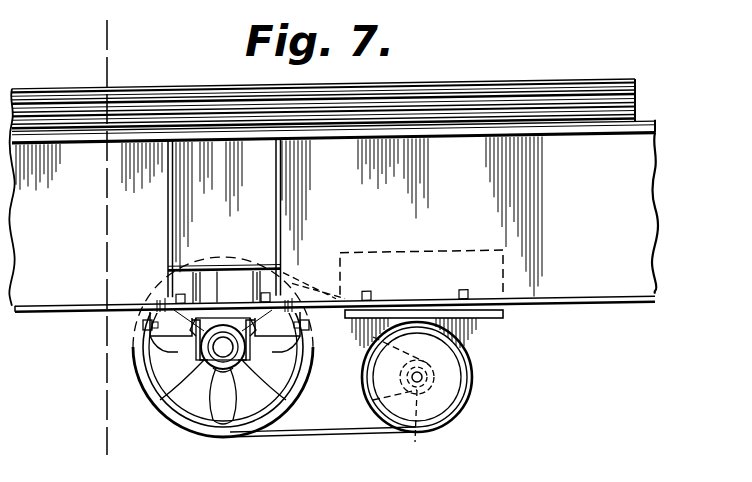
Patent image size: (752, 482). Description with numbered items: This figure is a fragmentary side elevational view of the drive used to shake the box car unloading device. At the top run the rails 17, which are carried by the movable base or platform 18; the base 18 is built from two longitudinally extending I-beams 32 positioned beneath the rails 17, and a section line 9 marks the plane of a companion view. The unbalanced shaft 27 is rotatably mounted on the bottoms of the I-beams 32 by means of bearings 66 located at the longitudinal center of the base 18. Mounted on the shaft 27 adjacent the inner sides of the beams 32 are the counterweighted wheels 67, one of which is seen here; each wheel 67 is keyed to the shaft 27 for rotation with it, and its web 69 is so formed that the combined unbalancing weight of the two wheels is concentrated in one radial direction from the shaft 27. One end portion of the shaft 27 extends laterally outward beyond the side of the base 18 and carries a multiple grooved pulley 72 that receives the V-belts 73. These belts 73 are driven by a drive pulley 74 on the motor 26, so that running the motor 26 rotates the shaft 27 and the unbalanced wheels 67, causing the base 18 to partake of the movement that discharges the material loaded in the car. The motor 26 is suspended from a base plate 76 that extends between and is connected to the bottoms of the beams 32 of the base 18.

The section line 9- 9 is at (128, 40).
The rails 17 is at (455, 118).
The movable base or platform 18 is at (82, 320).
The motor 26 is at (461, 410).
The unbalanced shaft 27 is at (223, 344).
The I-beams 32 is at (592, 289).
The bearings 66 is at (246, 341).
The counterweighted wheels 67 is at (202, 410).
The webs 69 is at (166, 341).
The multiple grooved pulley 72 is at (304, 379).
The V-belts 73 is at (319, 423).
The drive pulley 74 is at (419, 425).
The base plate 76 is at (486, 318).